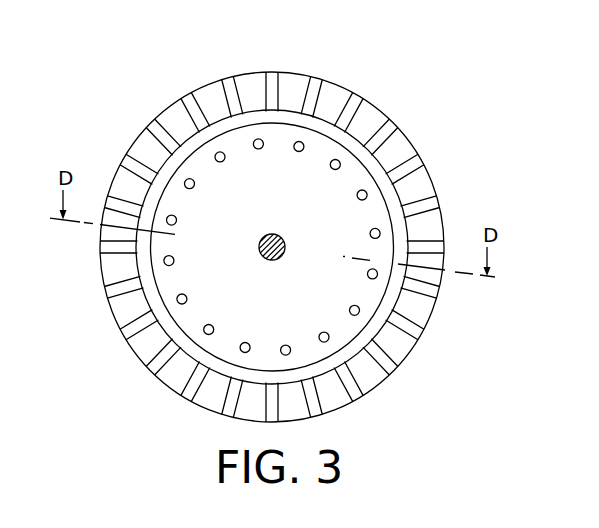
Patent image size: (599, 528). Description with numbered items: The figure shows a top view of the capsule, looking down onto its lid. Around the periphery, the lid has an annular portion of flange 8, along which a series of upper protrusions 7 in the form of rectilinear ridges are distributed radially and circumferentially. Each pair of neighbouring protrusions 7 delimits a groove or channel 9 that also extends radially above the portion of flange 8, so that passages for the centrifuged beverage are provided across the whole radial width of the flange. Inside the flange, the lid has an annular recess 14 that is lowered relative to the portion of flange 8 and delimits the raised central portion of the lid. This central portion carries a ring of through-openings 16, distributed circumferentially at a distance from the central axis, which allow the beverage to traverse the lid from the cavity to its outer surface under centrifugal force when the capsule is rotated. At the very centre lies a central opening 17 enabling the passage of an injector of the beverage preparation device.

The upper protrusions 7 is at (390, 118).
The portion of flange 8 is at (249, 87).
The groove or channel 9 is at (405, 148).
The recess 14 is at (143, 298).
The through-openings 16 is at (360, 313).
The central opening 17 is at (272, 260).